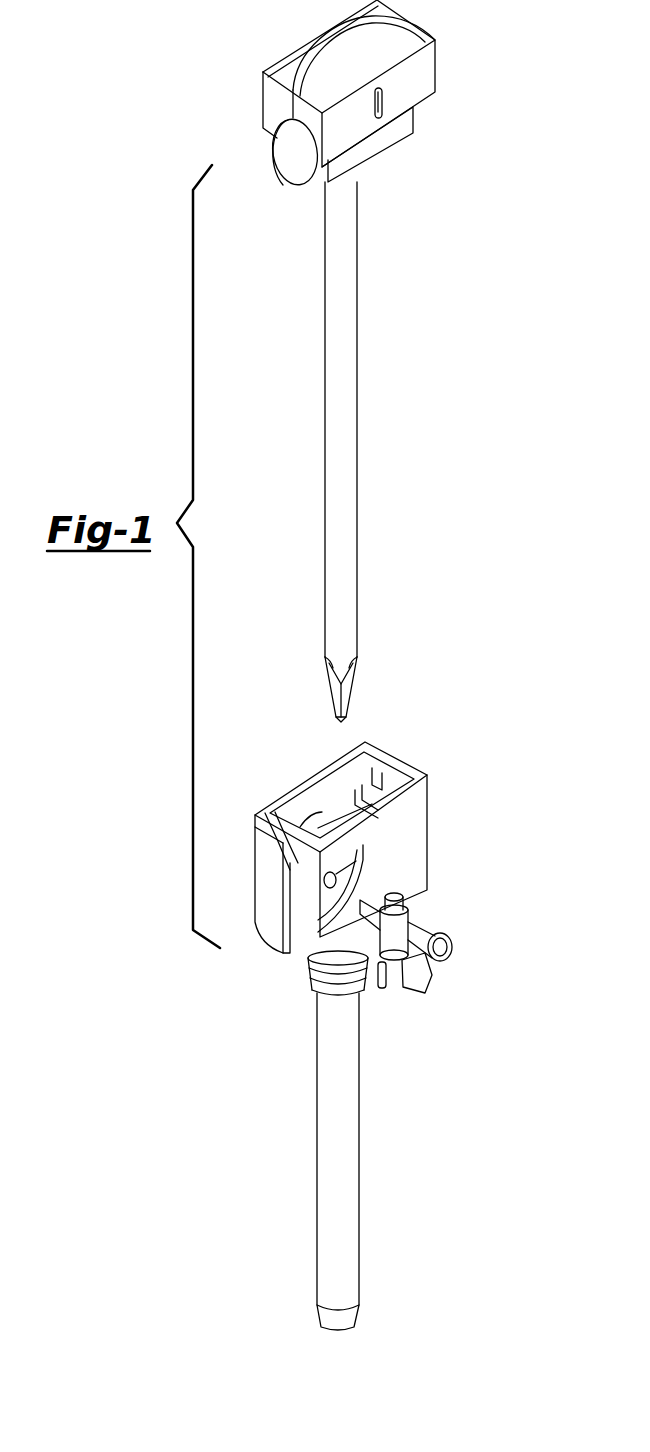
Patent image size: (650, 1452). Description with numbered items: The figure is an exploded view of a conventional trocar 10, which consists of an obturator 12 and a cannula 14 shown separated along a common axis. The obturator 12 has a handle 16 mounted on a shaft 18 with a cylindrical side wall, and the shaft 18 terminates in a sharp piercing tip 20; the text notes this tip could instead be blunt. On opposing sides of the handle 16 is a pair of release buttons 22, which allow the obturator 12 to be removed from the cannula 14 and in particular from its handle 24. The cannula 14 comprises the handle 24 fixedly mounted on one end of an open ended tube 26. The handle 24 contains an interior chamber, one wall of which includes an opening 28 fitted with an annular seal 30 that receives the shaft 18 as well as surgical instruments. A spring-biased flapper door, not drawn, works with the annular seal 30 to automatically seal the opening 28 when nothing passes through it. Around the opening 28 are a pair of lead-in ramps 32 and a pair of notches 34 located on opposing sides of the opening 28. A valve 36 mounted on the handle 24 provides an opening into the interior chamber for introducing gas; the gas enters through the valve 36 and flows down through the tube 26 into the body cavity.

The trocar 10 is at (520, 703).
The obturator 12 is at (383, 307).
The cannula 14 is at (388, 1098).
The handle 16 is at (476, 56).
The shaft 18 is at (342, 388).
The piercing tip 20 is at (355, 698).
The release buttons 22 is at (295, 152).
The handle 24 is at (445, 830).
The tube 26 is at (325, 1175).
The opening 28 is at (337, 827).
The annular seal 30 is at (300, 825).
The lead-in ramps 32 is at (377, 773).
The notches 34 is at (383, 797).
The valve 36 is at (415, 927).